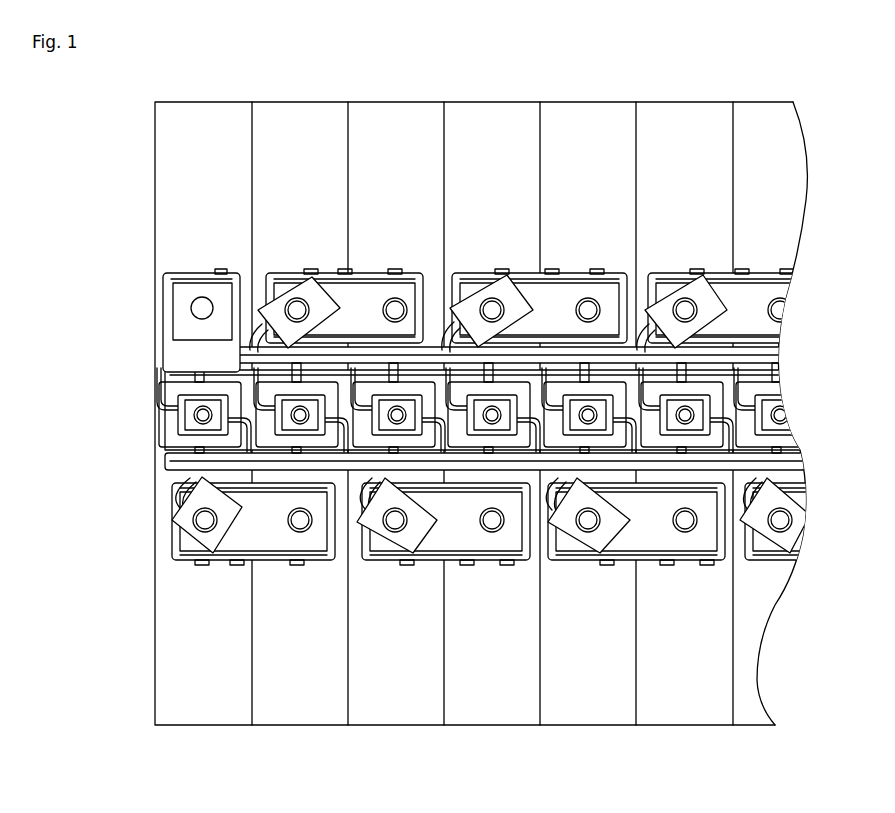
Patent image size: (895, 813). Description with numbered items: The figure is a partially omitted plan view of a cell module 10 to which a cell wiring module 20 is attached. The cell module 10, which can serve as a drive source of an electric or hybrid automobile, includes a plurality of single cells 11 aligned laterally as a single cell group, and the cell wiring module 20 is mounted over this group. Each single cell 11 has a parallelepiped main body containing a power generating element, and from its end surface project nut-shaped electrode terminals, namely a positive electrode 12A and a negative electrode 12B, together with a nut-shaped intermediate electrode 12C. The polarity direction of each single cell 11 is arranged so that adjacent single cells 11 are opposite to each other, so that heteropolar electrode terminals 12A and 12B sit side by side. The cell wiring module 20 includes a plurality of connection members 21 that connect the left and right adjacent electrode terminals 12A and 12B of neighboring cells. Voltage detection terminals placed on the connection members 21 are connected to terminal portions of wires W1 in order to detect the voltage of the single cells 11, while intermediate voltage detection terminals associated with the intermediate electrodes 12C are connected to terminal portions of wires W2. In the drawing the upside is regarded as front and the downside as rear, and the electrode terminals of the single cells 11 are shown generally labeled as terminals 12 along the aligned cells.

The cell module 10 is at (641, 88).
The single cell 11 is at (212, 718).
The electrode terminal module 12 is at (260, 560).
The positive electrode 12A is at (195, 313).
The negative electrode 12B is at (293, 300).
The intermediate electrode 12C is at (205, 424).
The cell wiring module 20 is at (138, 460).
The connection member 21 is at (352, 298).
The wire W1 is at (447, 357).
The wire W2 is at (207, 490).